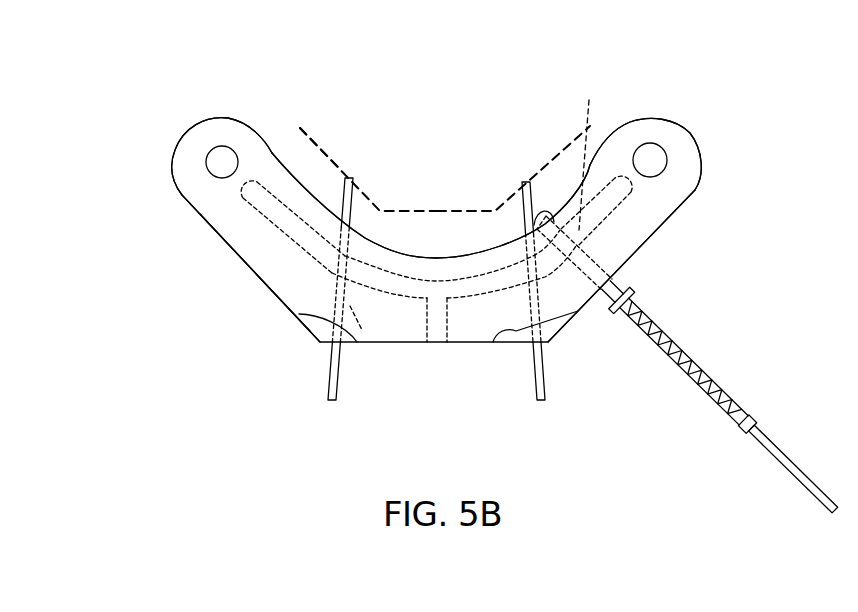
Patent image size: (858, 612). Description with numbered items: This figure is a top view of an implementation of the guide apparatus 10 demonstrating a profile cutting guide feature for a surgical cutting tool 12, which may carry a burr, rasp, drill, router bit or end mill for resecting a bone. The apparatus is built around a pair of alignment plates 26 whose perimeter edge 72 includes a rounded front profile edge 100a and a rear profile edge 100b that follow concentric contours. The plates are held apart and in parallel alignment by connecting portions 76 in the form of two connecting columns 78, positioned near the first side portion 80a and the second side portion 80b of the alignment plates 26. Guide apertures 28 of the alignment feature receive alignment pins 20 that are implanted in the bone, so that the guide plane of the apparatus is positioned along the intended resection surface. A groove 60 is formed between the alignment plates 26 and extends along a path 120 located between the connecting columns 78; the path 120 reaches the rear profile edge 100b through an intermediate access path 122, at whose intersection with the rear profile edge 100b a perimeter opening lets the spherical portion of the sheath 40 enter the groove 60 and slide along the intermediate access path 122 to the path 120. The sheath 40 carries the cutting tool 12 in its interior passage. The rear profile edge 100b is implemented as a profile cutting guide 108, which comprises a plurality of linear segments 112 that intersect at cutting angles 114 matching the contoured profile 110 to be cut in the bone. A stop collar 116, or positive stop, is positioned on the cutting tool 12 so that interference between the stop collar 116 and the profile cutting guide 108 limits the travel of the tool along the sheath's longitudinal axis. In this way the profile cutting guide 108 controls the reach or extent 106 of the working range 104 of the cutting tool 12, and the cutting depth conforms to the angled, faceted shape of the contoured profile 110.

The guide apparatus 10 is at (680, 63).
The surgical cutting tool 12 is at (687, 364).
The alignment pin 20 is at (328, 384).
The alignment plate 26 is at (186, 198).
The guide aperture 28 is at (356, 318).
The sheath 40 is at (413, 151).
The groove 60 is at (380, 297).
The perimeter edge 72 is at (670, 222).
The connecting portion 76 is at (218, 158).
The connecting column 78 is at (441, 143).
The first side portion 80a is at (160, 170).
The second side portion 80b is at (706, 108).
The front profile edge 100a is at (412, 250).
The rear profile edge 100b is at (268, 292).
The working range 104 is at (290, 142).
The extent 106 is at (318, 141).
The profile cutting guide 108 is at (212, 288).
The contoured profile 110 is at (548, 162).
The linear segment 112 is at (207, 229).
The cutting angle 114 is at (316, 318).
The stop collar 116 is at (620, 311).
The path 120 is at (248, 240).
The intermediate access path 122 is at (433, 323).